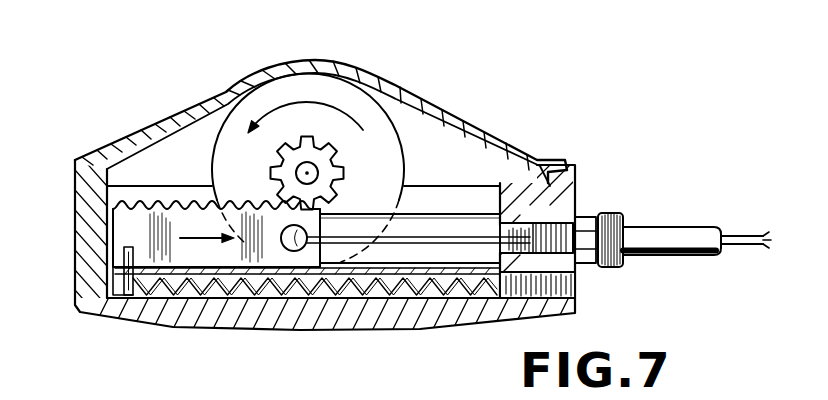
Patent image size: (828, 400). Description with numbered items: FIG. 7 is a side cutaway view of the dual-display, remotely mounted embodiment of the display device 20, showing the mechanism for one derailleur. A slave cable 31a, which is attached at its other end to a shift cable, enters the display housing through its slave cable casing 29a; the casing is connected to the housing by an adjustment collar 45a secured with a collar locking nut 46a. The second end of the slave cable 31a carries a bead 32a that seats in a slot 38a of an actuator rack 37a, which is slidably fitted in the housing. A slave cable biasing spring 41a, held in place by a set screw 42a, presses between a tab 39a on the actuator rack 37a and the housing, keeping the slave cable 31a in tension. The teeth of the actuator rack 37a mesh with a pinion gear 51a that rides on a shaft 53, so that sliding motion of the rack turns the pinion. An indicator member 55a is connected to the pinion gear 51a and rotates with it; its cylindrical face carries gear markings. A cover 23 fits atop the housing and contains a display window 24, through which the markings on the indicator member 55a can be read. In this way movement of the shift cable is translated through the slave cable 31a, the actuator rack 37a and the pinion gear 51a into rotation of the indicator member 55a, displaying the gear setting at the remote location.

The display device 20 is at (520, 117).
The cover 23 is at (152, 125).
The display window 24 is at (228, 88).
The slave cable casing 29a is at (683, 244).
The slave cable 31a is at (742, 235).
The bead 32a is at (257, 312).
The actuator rack 37a is at (133, 228).
The slot 38a is at (188, 322).
The tab 39a is at (284, 236).
The slave cable biasing spring 41a is at (357, 302).
The set screw 42a is at (545, 284).
The adjustment collar 45a is at (623, 215).
The collar locking nut 46a is at (579, 215).
The pinion gear 51a is at (334, 163).
The shaft 53 is at (282, 158).
The indicator member 55a is at (326, 93).